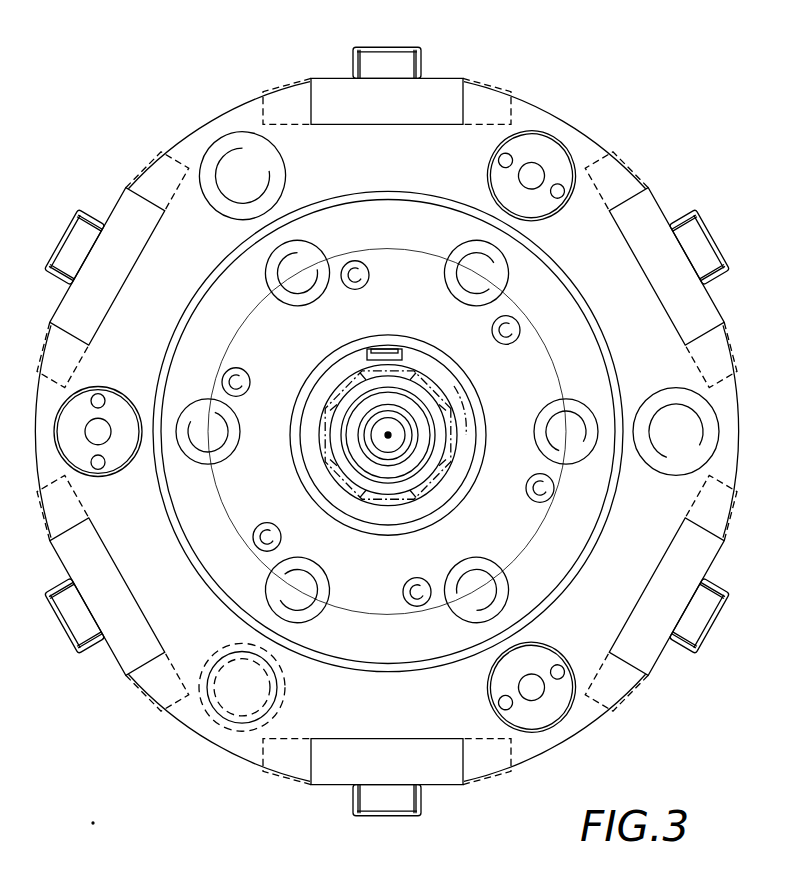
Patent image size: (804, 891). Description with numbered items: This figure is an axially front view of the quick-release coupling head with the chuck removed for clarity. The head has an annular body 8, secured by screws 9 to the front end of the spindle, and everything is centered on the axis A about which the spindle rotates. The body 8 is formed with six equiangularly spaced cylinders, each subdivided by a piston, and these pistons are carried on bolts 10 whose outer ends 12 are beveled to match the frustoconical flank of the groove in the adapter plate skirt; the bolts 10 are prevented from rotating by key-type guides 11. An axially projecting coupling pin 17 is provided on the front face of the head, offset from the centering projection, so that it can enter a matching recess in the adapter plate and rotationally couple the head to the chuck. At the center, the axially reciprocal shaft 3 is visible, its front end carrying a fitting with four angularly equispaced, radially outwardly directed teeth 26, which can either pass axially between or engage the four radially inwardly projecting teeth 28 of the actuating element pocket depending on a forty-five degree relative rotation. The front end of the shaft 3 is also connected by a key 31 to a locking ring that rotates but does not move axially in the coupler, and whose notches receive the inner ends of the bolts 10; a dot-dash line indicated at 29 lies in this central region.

The shaft 3 is at (381, 435).
The annular body 8 is at (587, 166).
The screws 9 is at (667, 425).
The bolts 10 is at (371, 76).
The key-type guides 11 is at (550, 110).
The outer ends 12 is at (72, 224).
The coupling pin 17 is at (240, 166).
The teeth 26 is at (425, 384).
The teeth 28 is at (446, 410).
The bearing 29 is at (458, 446).
The key 31 is at (384, 349).
The axis A is at (388, 441).